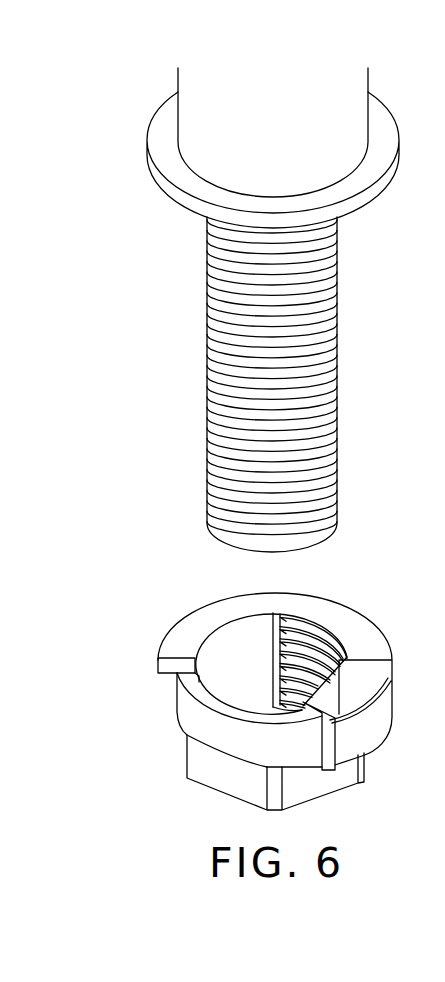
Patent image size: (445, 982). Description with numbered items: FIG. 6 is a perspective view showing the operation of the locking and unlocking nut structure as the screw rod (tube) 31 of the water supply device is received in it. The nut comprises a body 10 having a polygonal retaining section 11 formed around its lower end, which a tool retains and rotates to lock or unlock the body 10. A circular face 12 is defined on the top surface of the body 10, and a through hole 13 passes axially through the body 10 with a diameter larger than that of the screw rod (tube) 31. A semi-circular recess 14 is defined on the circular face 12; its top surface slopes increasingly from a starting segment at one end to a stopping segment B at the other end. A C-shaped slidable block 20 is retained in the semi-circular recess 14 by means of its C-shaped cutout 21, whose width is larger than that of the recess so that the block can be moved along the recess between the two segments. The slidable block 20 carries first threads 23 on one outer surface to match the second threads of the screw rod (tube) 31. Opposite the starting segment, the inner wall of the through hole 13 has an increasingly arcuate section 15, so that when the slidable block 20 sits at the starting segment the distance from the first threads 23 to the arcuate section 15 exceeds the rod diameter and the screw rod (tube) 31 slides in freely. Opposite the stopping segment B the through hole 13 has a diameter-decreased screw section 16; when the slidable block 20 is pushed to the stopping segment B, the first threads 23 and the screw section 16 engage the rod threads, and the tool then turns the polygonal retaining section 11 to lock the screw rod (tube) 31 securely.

The screw rod (tube) 31 is at (345, 380).
The first threads 23 is at (286, 628).
The increasingly arcuate section 15 is at (232, 633).
The circular face 12 is at (177, 642).
The diameter-decreased screw section 16 is at (337, 640).
The stopping segment B is at (185, 675).
The semi-circular recess 14 is at (198, 693).
The body 10 is at (185, 762).
The through hole 13 is at (260, 715).
The polygonal retaining section 11 is at (300, 793).
The C-shaped cutout 21 is at (318, 738).
The slidable block 20 is at (390, 703).